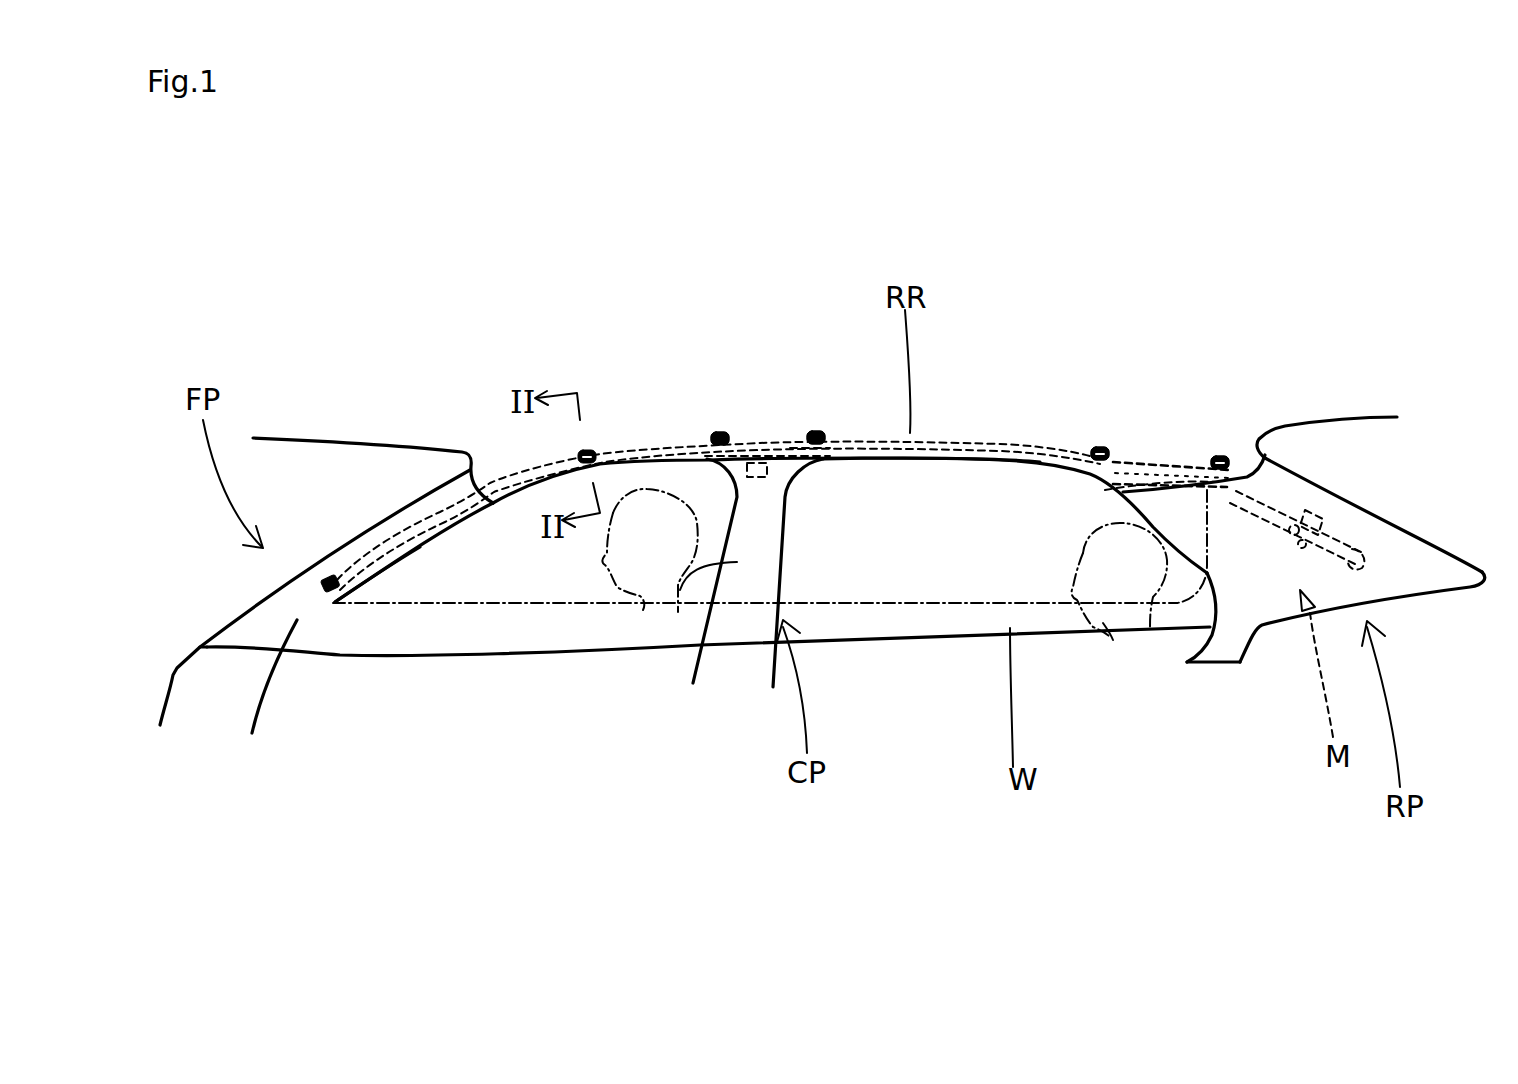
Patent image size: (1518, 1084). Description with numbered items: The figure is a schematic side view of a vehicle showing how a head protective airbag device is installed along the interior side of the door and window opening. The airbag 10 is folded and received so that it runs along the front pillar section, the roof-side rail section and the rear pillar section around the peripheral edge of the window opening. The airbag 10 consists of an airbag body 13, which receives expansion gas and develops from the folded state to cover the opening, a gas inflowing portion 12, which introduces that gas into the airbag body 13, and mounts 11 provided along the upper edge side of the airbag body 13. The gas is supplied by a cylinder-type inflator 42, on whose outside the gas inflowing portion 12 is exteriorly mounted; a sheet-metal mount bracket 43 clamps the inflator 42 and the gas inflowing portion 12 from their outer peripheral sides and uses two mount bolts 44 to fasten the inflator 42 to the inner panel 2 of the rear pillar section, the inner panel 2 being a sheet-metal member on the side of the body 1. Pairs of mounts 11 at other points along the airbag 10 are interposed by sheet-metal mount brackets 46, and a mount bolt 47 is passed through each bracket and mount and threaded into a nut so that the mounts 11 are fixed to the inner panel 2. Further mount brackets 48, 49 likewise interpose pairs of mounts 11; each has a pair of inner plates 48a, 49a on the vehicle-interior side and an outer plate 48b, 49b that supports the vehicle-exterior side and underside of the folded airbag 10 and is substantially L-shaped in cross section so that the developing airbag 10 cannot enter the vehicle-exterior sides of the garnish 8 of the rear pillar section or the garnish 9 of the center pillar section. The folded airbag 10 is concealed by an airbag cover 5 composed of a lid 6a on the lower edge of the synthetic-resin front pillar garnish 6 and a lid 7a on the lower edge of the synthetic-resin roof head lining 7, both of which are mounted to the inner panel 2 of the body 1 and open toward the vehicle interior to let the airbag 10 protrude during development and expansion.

The body 1 is at (500, 463).
The inner panel 2 is at (427, 507).
The airbag cover 5 is at (718, 611).
The front pillar garnish 6 is at (297, 620).
The lid 6a is at (393, 560).
The roof head lining 7 is at (645, 443).
The lid 7a is at (910, 462).
The garnish of the rear pillar section 8 is at (1248, 573).
The garnish of the center pillar section 9 is at (740, 560).
The airbag 10 is at (1002, 443).
The mounts 11 is at (355, 567).
The gas inflowing portion 12 is at (1268, 497).
The airbag body 13 is at (913, 598).
The inflator 42 is at (1347, 512).
The mount bracket 43 is at (1350, 532).
The mount bolts 44 is at (1334, 540).
The mount bracket 46 is at (335, 578).
The mount bolt 47 is at (330, 585).
The mount bracket 48 is at (1191, 448).
The inner plates 48a is at (1213, 460).
The outer plate 48b is at (1105, 488).
The mount bracket 49 is at (799, 442).
The inner plates 49a is at (803, 430).
The outer plate 49b is at (807, 463).